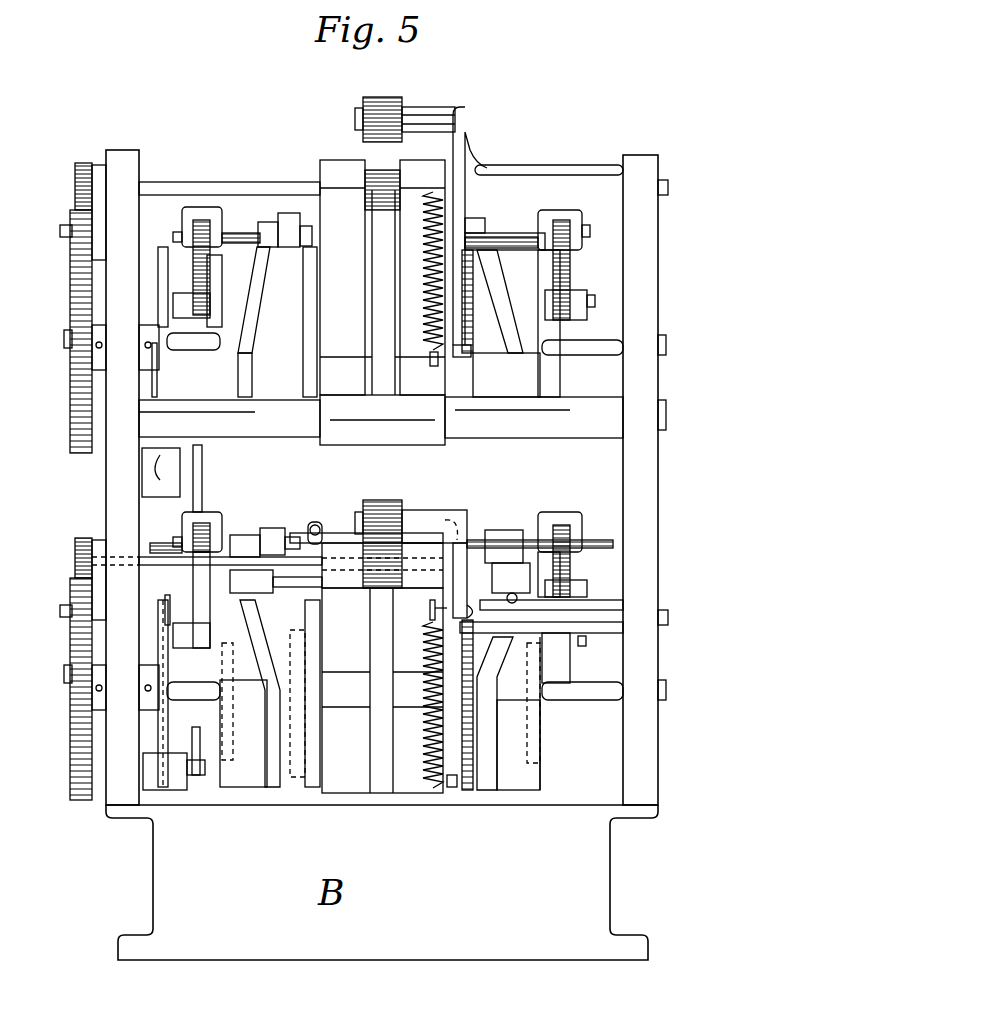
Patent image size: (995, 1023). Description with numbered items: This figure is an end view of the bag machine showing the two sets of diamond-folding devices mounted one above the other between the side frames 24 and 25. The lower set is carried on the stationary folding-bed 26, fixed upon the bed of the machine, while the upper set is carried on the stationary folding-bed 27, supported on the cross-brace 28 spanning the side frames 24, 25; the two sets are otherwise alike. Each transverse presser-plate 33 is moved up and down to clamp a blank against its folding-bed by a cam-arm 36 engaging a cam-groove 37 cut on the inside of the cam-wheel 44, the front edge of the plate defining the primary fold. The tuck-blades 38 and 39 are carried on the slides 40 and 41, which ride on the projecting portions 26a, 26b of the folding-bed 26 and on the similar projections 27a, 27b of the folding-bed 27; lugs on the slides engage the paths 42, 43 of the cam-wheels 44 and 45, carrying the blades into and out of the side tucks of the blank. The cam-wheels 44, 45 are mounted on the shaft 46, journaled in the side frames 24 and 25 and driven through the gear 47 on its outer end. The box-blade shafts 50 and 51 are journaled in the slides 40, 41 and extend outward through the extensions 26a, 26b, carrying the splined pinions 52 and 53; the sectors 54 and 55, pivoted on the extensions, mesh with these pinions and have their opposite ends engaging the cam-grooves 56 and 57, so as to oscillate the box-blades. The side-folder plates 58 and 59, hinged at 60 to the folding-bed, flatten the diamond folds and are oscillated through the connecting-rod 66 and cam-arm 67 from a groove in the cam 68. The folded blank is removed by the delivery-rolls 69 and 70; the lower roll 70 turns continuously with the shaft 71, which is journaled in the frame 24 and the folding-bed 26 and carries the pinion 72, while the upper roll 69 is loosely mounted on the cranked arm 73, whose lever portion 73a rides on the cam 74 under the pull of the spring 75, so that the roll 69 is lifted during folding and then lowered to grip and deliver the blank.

The side frame 24 is at (122, 165).
The side frame 25 is at (634, 175).
The stationary folding-bed 26 is at (382, 690).
The projecting portion of folding-bed 26a is at (216, 521).
The projecting portion of folding-bed 26b is at (485, 580).
The stationary folding-bed 27 is at (382, 302).
The projection of folding-bed 27a is at (200, 208).
The projection of folding-bed 27b is at (550, 215).
The cross-brace 28 is at (590, 440).
The transverse presser-plate 33 is at (418, 543).
The cam-arm 36 is at (306, 716).
The cam-groove 37 is at (313, 766).
The tuck-blade 38 is at (312, 222).
The tuck-blade 39 is at (448, 218).
The slide 40 is at (251, 582).
The slide 41 is at (511, 583).
The cam path 42 is at (250, 333).
The cam path 43 is at (504, 300).
The cam-wheel 44 is at (252, 570).
The cam-wheel 45 is at (506, 571).
The shaft 46 is at (208, 342).
The gear 47 is at (80, 308).
The shaft 50 is at (245, 233).
The shaft 51 is at (522, 240).
The pinion 52 is at (196, 232).
The pinion 53 is at (570, 236).
The sector 54 is at (202, 275).
The sector 55 is at (566, 282).
The cam-groove 56 is at (226, 741).
The cam-groove 57 is at (538, 754).
The side-folder plate 58 is at (340, 533).
The side-folder plate 59 is at (456, 530).
The hinge 60 is at (315, 524).
The connecting-rod 66 is at (203, 492).
The cam-arm 67 is at (170, 470).
The cam 68 is at (158, 385).
The upper delivery-roll 69 is at (386, 112).
The delivery-roll 70 is at (372, 183).
The shaft 71 is at (283, 190).
The pinion 72 is at (80, 168).
The cranked arm 73 is at (466, 125).
The lever portion 73a is at (455, 358).
The cam 74 is at (470, 318).
The spring 75 is at (428, 265).